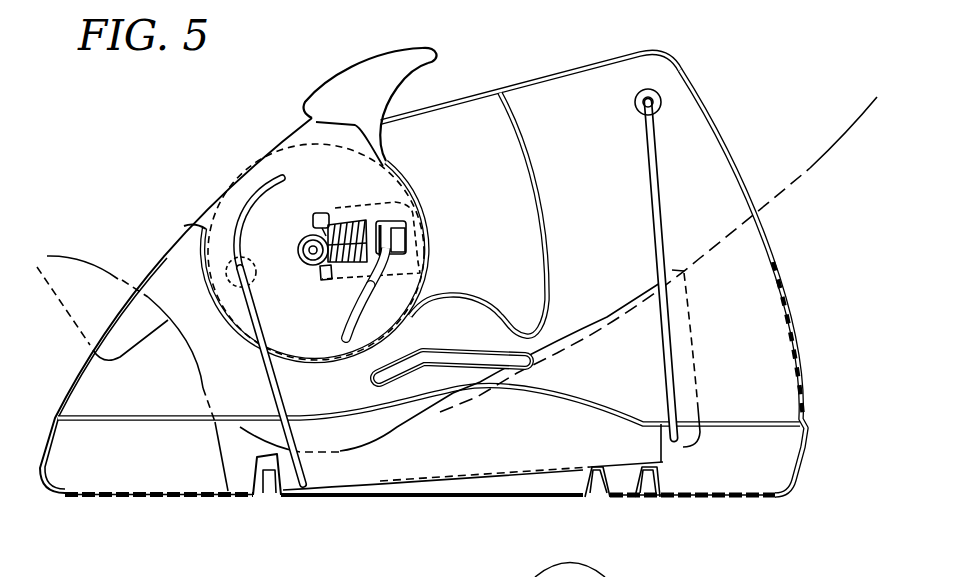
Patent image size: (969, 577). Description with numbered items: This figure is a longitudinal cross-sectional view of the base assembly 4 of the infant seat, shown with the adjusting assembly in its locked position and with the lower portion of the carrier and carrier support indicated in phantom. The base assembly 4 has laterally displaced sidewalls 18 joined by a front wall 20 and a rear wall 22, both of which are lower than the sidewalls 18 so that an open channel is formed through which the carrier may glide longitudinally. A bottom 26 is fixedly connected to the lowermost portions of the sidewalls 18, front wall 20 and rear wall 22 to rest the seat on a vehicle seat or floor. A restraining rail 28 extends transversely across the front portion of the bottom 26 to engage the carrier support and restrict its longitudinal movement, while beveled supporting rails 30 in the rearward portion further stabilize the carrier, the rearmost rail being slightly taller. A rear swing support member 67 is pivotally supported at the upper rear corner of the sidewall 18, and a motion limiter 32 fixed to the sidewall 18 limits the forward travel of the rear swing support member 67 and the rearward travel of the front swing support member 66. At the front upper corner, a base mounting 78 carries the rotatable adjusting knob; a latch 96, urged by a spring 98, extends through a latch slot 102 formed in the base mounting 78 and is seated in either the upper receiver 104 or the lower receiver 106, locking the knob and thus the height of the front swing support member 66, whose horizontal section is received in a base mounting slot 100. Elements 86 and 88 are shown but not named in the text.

The base assembly 4 is at (446, 296).
The sidewall 18 is at (667, 76).
The front wall 20 is at (50, 446).
The rear wall 22 is at (787, 302).
The bottom 26 is at (123, 488).
The restraining rail 28 is at (258, 497).
The supporting rail 30 is at (643, 467).
The motion limiter 32 is at (478, 358).
The front swing support member 66 is at (290, 404).
The rear swing support member 67 is at (659, 165).
The base mounting 78 is at (245, 175).
The lever arm 86 is at (308, 110).
The lever tip 88 is at (438, 56).
The latch 96 is at (412, 217).
The spring 98 is at (330, 213).
The base mounting slot 100 is at (240, 221).
The latch slot 102 is at (334, 293).
The upper receiver 104 is at (418, 249).
The lower receiver 106 is at (330, 330).